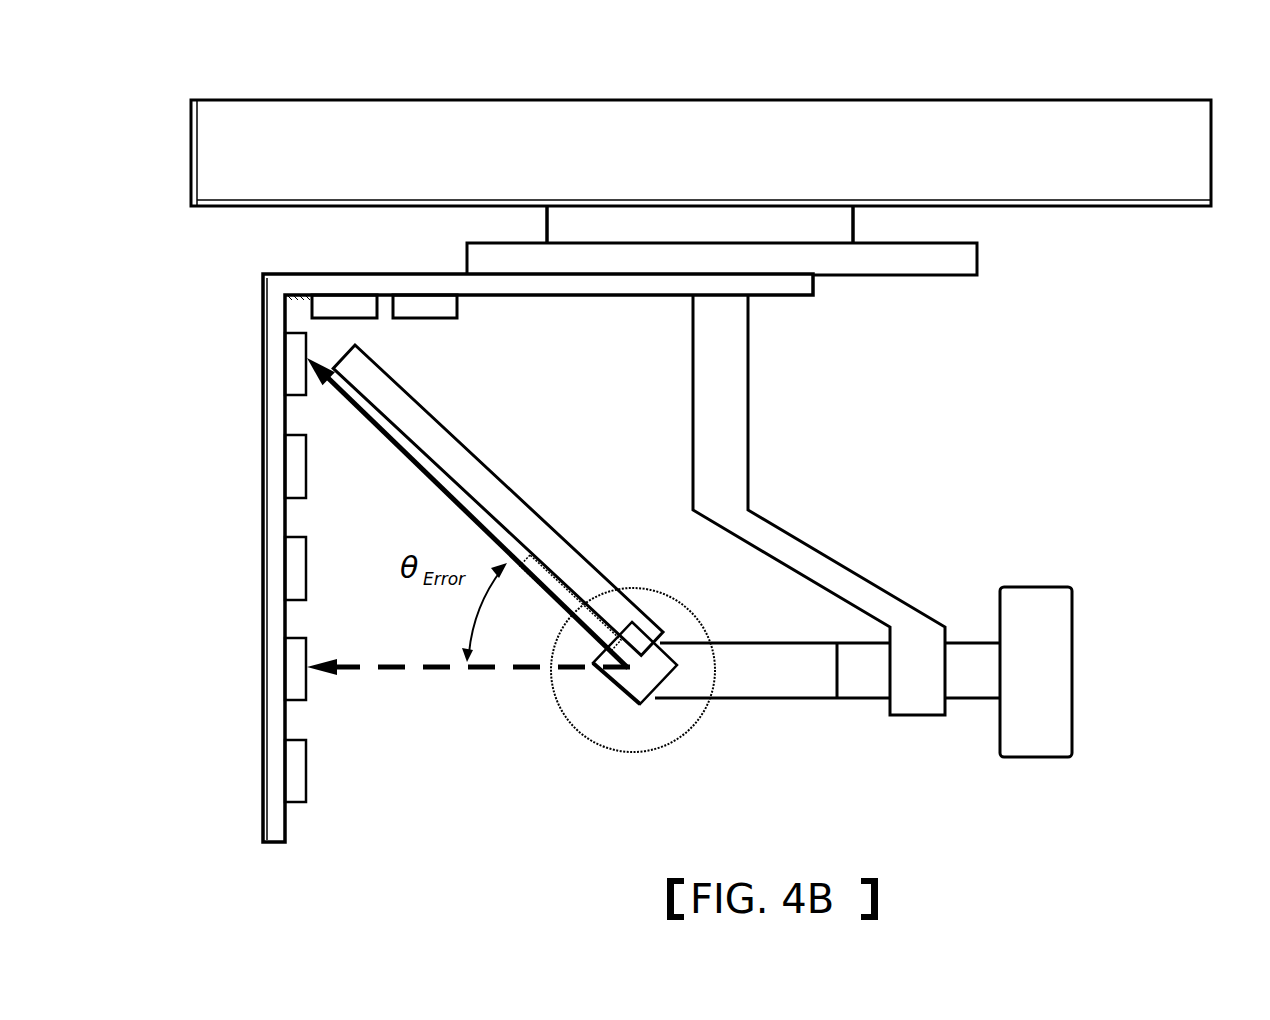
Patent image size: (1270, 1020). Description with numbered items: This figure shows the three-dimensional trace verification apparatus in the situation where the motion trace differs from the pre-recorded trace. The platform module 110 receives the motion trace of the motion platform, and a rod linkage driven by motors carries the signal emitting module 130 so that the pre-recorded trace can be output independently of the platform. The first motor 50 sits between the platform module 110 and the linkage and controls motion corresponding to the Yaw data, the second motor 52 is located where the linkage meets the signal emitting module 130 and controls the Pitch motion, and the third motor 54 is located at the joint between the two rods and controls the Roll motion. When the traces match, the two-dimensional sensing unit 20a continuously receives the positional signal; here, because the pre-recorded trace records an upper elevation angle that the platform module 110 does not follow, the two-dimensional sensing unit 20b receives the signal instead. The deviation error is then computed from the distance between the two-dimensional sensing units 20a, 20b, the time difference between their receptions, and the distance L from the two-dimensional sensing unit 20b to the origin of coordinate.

The platform module 110 is at (1143, 130).
The first motor 50 is at (833, 222).
The second motor 52 is at (643, 655).
The third motor 54 is at (1042, 605).
The signal emitting module 130 is at (635, 683).
The two-dimensional sensing unit 20a is at (290, 683).
The two-dimensional sensing unit 20b is at (295, 358).
The distance L is at (515, 490).